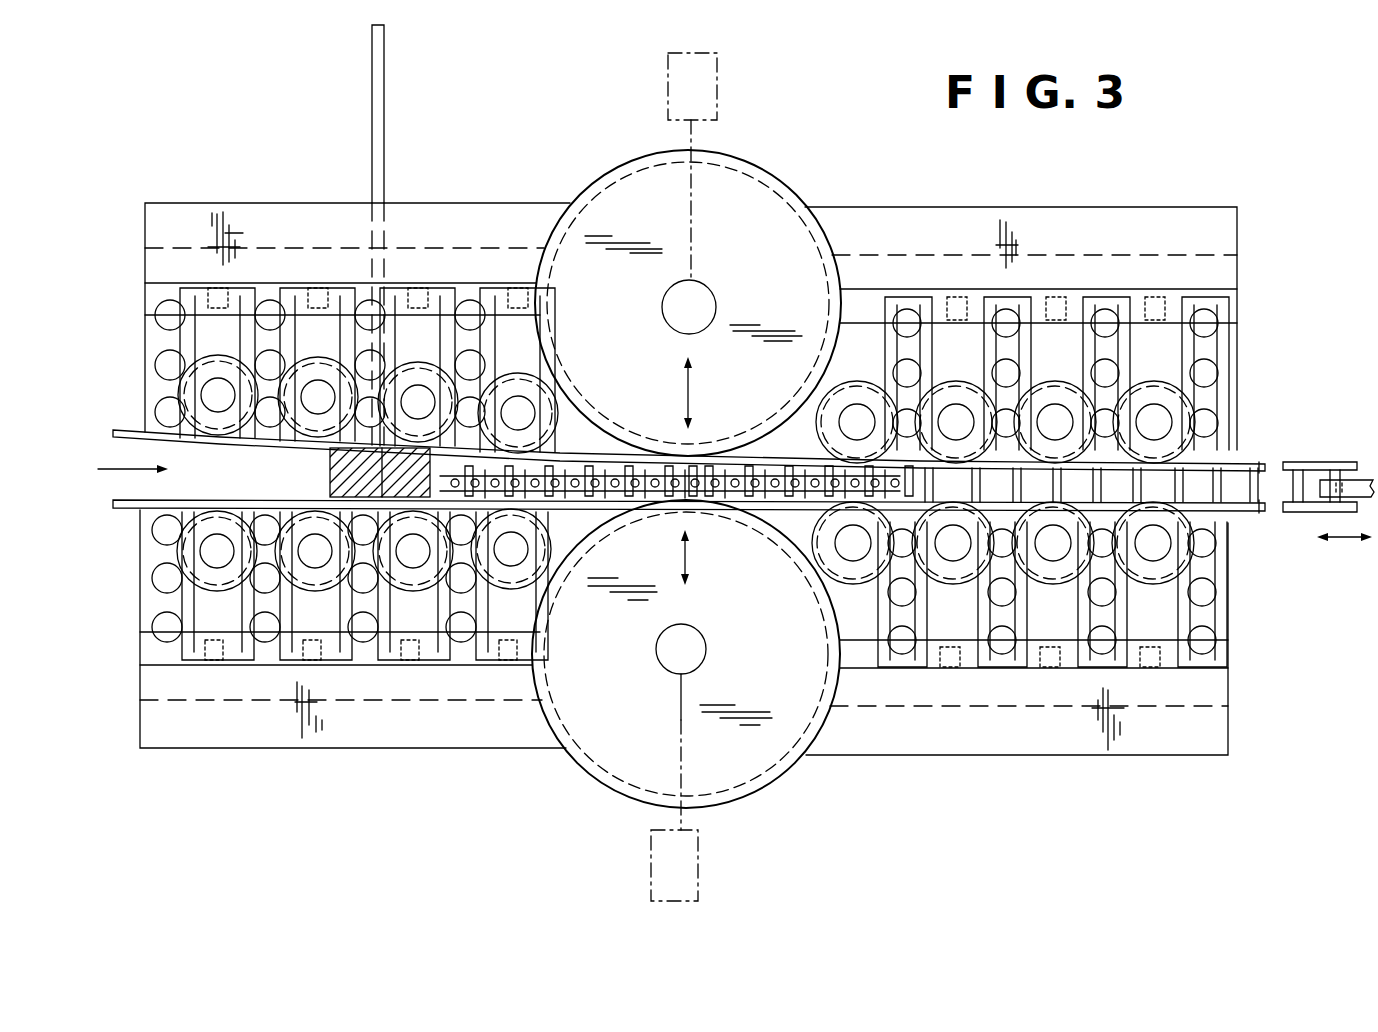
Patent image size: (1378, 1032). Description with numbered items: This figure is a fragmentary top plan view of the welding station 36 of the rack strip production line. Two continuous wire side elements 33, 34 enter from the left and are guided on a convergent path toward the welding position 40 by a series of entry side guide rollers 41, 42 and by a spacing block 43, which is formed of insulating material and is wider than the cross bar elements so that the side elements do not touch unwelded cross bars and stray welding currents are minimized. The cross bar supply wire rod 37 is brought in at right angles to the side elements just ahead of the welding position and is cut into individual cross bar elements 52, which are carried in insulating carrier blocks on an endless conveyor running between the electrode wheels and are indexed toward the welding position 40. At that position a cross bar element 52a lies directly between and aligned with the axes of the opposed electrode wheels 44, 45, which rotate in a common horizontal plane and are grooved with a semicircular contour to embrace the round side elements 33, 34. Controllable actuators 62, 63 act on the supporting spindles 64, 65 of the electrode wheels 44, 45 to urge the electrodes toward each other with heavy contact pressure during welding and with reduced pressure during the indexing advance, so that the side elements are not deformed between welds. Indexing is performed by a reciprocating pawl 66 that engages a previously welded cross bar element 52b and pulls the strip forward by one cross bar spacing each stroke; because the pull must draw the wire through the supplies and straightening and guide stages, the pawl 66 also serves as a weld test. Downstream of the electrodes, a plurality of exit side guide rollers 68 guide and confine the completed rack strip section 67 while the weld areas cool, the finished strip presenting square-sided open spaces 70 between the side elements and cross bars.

The wire side element 33 is at (126, 430).
The wire side element 34 is at (187, 556).
The welding station 36 is at (380, 730).
The wire rod 37 is at (373, 150).
The welding position 40 is at (673, 477).
The entry side guide roller 41 is at (213, 432).
The entry side guide roller 42 is at (182, 553).
The spacing block 43 is at (330, 470).
The electrode wheel 44 is at (633, 187).
The electrode wheel 45 is at (742, 748).
The cross bar element 52 is at (612, 458).
The cross bar element 52a is at (693, 458).
The previously welded cross bar element 52b is at (1364, 418).
The controllable actuator 62 is at (720, 90).
The controllable actuator 63 is at (698, 862).
The supporting spindle 64 is at (680, 306).
The supporting spindle 65 is at (690, 650).
The reciprocating pawl 66 is at (1320, 490).
The completed rack strip section 67 is at (1243, 467).
The exit side guide roller 68 is at (1162, 395).
The open space 70 is at (1237, 483).